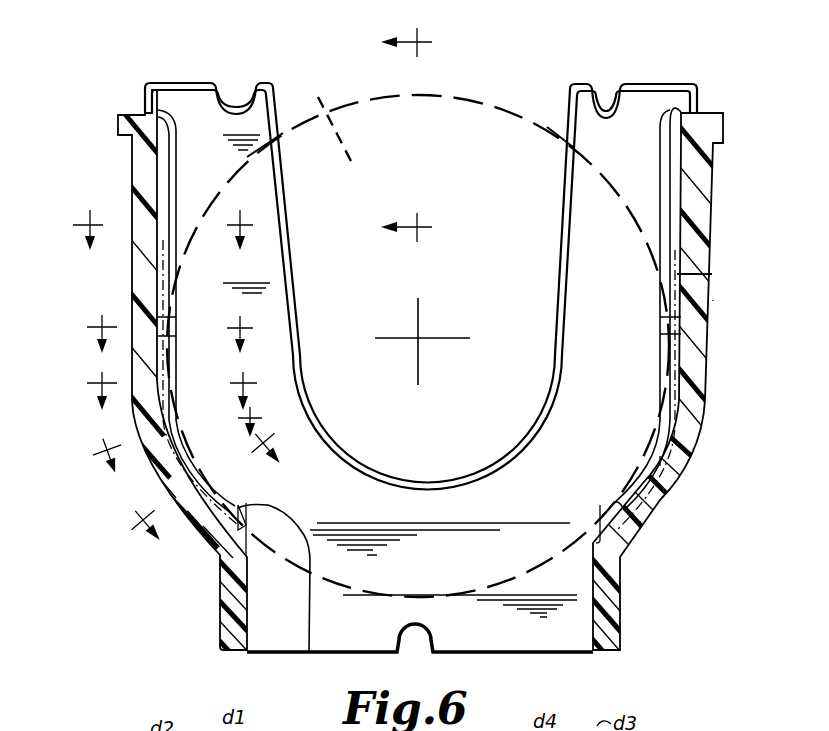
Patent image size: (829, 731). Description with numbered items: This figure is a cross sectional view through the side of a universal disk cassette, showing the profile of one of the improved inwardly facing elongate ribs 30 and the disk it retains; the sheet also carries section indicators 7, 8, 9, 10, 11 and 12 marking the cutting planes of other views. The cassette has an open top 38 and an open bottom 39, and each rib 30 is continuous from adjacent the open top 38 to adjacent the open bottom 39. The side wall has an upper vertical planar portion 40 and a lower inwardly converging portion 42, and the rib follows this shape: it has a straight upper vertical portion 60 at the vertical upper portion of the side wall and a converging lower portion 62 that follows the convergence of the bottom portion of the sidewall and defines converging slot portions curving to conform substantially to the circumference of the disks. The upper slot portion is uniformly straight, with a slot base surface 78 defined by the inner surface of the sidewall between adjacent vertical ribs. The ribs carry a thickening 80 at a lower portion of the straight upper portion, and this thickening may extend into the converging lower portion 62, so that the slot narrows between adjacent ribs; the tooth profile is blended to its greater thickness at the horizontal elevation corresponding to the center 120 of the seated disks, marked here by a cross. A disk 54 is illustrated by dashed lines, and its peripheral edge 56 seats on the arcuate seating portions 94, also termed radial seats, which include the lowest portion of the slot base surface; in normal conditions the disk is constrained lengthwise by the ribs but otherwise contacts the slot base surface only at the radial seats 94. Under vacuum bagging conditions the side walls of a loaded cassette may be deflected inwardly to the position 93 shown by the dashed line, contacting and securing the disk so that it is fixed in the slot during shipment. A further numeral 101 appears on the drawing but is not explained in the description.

The section line 7- 7 is at (159, 221).
The section line 8- 8 is at (166, 320).
The section line 9- 9 is at (167, 381).
The section line 10- 10 is at (175, 432).
The section line 11- 11 is at (202, 486).
The section line 12- 12 is at (379, 134).
The ribs 30 is at (683, 208).
The open top 38 is at (552, 107).
The open bottom 39 is at (570, 621).
The upper vertical planar portion 40 is at (712, 314).
The lower inwardly converging portion 42 is at (672, 517).
The disk 54 is at (410, 115).
The peripheral edge 56 is at (436, 96).
The straight upper vertical portion 60 is at (670, 187).
The converging lower portion 62 is at (658, 468).
The slot base surface 78 is at (158, 207).
The thickening 80 is at (177, 385).
The position 93 is at (712, 274).
The arcuate seating portions 94 is at (308, 652).
The foot 101 is at (233, 657).
The center 120 is at (420, 338).